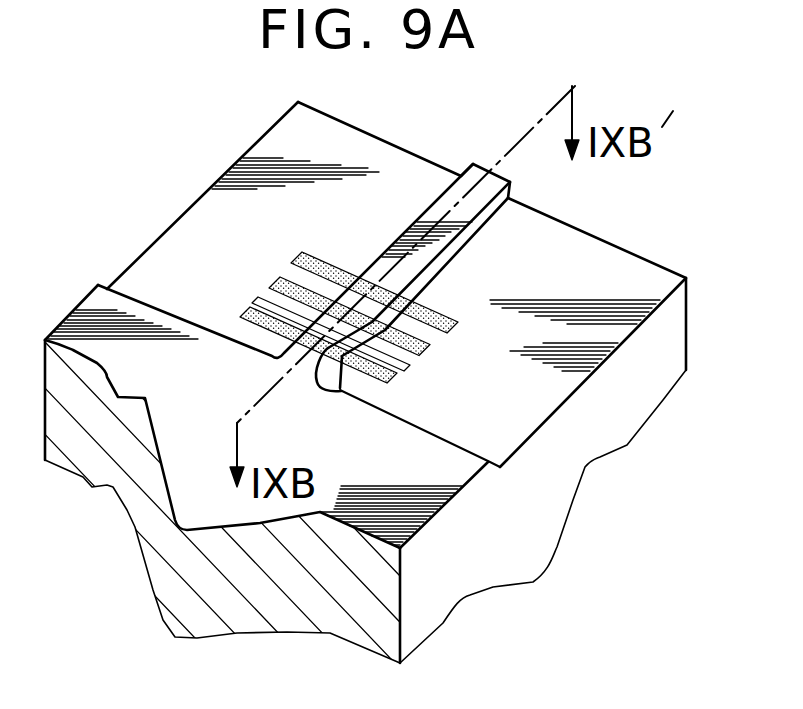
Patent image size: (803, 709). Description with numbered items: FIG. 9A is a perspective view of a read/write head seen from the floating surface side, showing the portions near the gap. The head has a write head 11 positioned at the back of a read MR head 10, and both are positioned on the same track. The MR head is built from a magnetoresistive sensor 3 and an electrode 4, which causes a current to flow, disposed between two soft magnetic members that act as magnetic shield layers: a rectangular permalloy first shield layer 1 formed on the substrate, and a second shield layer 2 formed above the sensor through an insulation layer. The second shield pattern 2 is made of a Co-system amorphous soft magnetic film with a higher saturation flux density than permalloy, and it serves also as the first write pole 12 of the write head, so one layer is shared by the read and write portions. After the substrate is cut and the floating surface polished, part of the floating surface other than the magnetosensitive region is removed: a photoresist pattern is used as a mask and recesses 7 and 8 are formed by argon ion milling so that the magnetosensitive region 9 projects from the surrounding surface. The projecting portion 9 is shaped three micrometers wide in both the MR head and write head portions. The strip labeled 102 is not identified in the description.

The first shield layer 1 is at (253, 320).
The second shield layer 2 is at (272, 280).
The first write pole 12 is at (303, 295).
The magnetoresistive sensor 3 is at (344, 390).
The electrode 4 is at (257, 298).
The recess 7 is at (613, 257).
The recess 8 is at (357, 146).
The projecting portion 9 is at (420, 255).
The read MR head 10 is at (441, 366).
The write head 11 is at (478, 333).
The electrode strip 102 is at (337, 229).